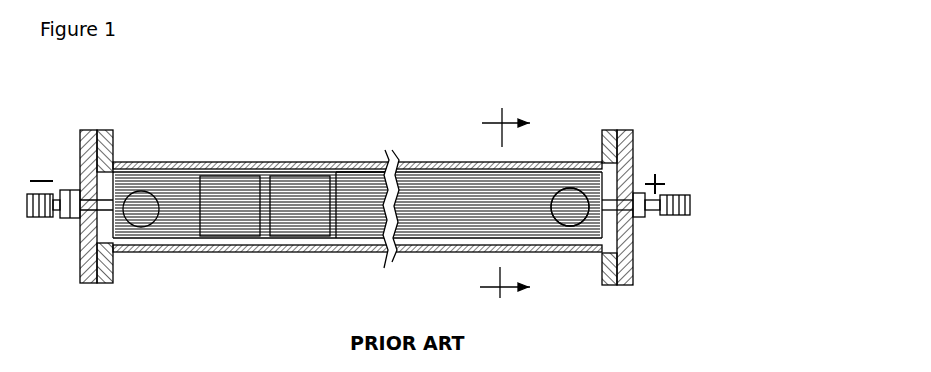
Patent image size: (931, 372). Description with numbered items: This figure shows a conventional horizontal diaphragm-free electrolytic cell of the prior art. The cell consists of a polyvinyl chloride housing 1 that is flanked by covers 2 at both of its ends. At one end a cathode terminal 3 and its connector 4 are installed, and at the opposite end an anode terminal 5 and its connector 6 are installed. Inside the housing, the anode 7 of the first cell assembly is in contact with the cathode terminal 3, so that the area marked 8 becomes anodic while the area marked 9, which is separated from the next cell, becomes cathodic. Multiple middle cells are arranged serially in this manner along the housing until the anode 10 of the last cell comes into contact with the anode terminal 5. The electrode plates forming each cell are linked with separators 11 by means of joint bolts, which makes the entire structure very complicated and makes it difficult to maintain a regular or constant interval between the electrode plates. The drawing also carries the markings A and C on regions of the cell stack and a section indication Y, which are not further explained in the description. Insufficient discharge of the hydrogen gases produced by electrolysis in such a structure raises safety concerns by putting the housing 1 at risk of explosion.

The housing 1 is at (272, 162).
The covers 2 is at (90, 135).
The cathode terminal 3 is at (87, 178).
The connector 4 is at (60, 212).
The anode terminal 5 is at (628, 182).
The connector 6 is at (655, 216).
The anode 7 is at (137, 232).
The anodic area 8 is at (226, 236).
The cathodic area 9 is at (293, 232).
The anode 10 is at (573, 232).
The separators 11 is at (336, 172).
The region A is at (155, 192).
The region C is at (560, 164).
The section line Y is at (514, 206).